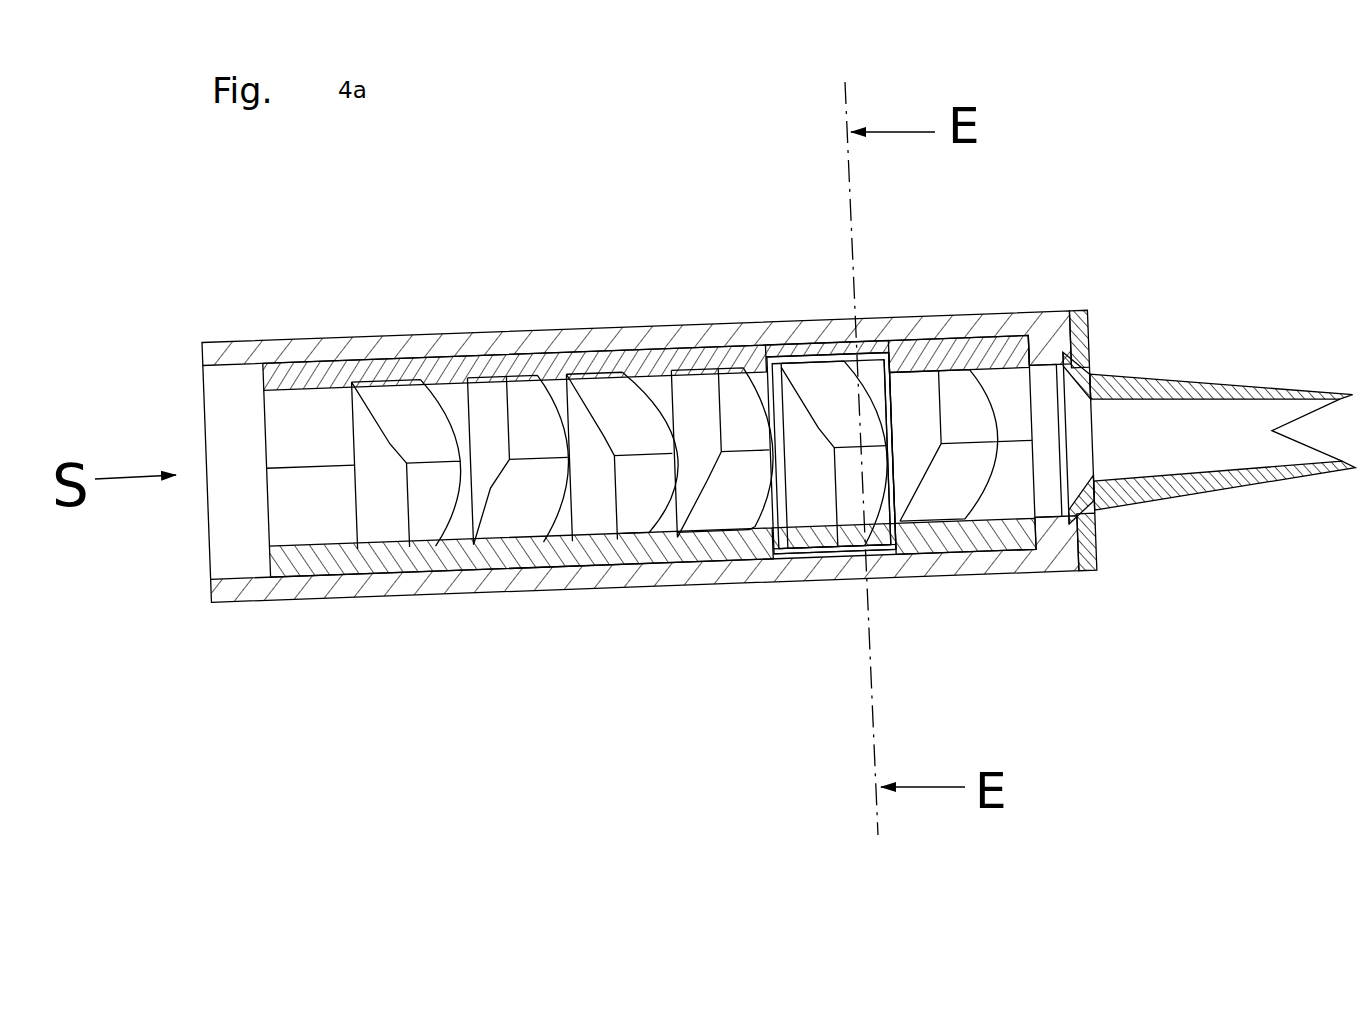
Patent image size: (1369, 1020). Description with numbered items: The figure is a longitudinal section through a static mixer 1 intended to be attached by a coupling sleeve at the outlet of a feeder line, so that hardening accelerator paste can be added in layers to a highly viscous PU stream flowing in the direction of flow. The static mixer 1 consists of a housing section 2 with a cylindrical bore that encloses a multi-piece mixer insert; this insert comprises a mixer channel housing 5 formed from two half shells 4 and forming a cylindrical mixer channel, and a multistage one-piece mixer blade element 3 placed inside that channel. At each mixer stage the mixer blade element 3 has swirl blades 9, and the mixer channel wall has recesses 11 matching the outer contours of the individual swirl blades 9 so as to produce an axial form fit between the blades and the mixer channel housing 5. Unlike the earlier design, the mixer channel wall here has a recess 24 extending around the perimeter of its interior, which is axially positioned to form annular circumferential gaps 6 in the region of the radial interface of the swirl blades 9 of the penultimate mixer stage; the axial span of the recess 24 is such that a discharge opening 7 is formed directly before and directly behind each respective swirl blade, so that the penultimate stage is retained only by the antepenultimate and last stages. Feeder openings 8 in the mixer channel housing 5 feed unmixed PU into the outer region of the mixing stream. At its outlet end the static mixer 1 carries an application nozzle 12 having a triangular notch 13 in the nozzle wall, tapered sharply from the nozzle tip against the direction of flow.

The static mixer 1 is at (588, 265).
The housing section 2 is at (373, 347).
The mixer blade element 3 is at (545, 580).
The half shells 4 is at (290, 432).
The mixer channel housing 5 is at (443, 580).
The annular circumferential gap 6 is at (823, 556).
The discharge opening 7 is at (779, 547).
The feeder opening 8 is at (884, 540).
The swirl blade 9 is at (382, 470).
The recess 11 is at (635, 567).
The application nozzle 12 is at (1224, 401).
The triangular notch 13 is at (1325, 425).
The recess 24 is at (822, 362).